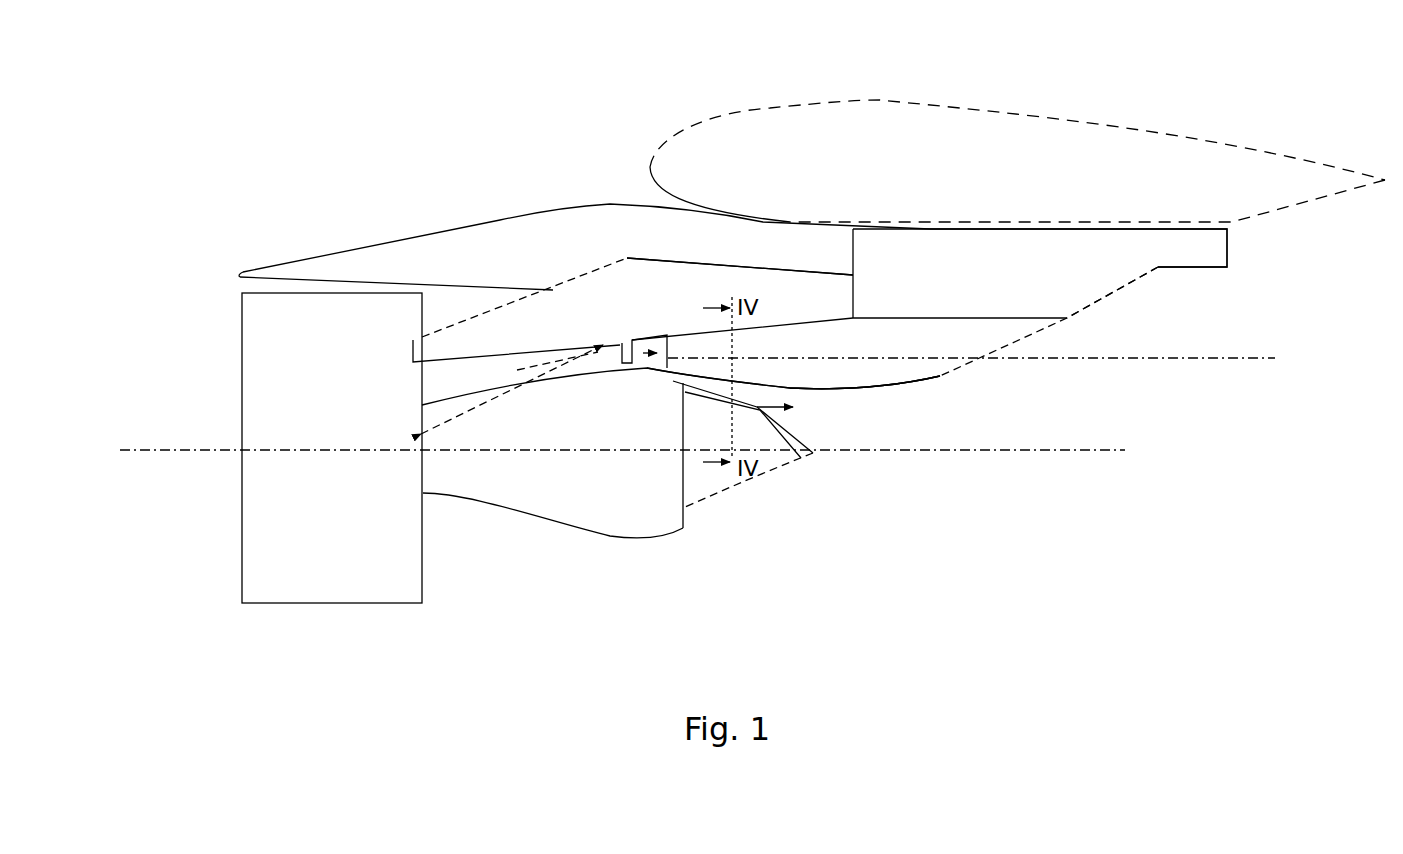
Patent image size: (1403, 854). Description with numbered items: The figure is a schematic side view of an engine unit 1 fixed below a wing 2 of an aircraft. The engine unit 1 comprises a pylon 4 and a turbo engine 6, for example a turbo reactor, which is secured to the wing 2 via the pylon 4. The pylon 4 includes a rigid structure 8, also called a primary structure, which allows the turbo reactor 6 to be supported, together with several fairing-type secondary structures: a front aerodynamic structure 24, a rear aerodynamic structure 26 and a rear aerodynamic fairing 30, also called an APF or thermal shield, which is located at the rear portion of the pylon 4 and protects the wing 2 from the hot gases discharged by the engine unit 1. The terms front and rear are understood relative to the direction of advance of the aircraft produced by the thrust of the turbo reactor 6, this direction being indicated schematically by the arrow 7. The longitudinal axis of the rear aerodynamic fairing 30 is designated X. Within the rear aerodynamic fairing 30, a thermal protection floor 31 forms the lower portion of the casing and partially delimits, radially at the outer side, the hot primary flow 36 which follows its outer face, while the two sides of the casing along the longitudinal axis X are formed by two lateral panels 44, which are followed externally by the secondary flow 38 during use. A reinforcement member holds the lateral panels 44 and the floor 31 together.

The engine unit 1 is at (183, 258).
The wing 2 is at (1154, 138).
The pylon 4 is at (600, 197).
The turbo engine 6 is at (320, 617).
The arrow 7 is at (285, 146).
The rigid structure 8 is at (768, 282).
The front aerodynamic structure 24 is at (443, 240).
The rear aerodynamic structure 26 is at (947, 247).
The rear aerodynamic fairing 30 is at (893, 347).
The thermal protection floor 31 is at (827, 387).
The primary flow 36 is at (808, 458).
The secondary flow 38 is at (556, 360).
The lateral panels 44 is at (940, 327).
The longitudinal axis X is at (1213, 358).